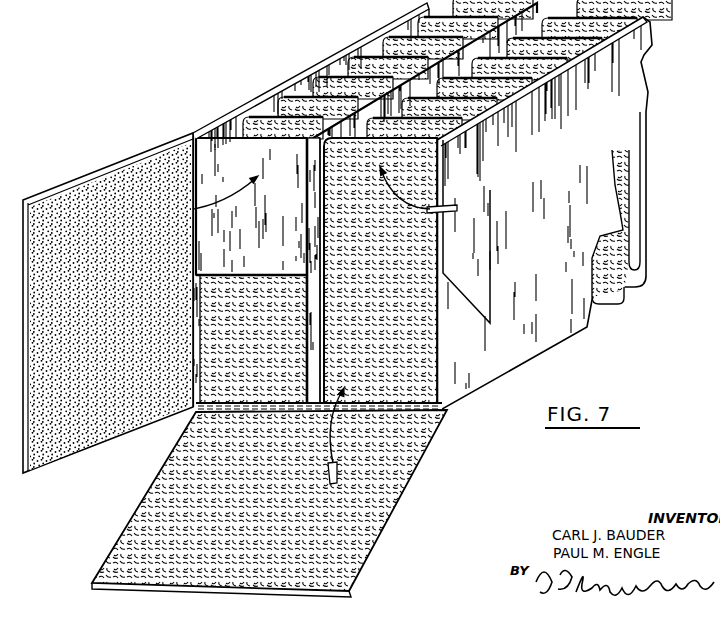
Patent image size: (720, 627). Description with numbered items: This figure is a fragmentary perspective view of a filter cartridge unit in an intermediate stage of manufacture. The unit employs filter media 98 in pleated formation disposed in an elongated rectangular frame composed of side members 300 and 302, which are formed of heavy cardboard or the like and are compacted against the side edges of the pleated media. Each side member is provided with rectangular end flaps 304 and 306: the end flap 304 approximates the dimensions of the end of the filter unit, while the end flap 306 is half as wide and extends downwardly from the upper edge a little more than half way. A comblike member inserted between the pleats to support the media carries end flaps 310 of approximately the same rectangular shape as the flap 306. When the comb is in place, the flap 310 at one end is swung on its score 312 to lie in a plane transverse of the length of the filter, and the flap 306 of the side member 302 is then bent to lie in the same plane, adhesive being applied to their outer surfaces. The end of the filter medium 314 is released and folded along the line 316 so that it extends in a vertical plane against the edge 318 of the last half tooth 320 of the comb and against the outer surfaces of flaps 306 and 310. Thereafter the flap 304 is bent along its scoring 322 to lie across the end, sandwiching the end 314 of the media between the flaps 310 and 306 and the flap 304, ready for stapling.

The filter media 98 is at (646, 204).
The side member 300 is at (372, 38).
The side member 302 is at (628, 72).
The end flap 304 is at (75, 432).
The end flap 306 is at (490, 323).
The end flap 310 is at (230, 162).
The score 312 is at (307, 207).
The end of the filter medium 314 is at (338, 532).
The fold line 316 is at (420, 413).
The edge 318 is at (308, 327).
The last half tooth 320 is at (318, 305).
The scoring 322 is at (190, 367).